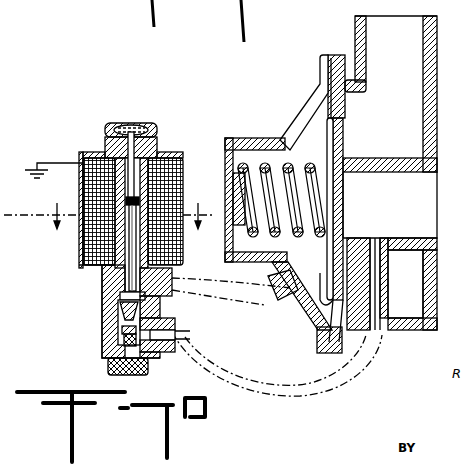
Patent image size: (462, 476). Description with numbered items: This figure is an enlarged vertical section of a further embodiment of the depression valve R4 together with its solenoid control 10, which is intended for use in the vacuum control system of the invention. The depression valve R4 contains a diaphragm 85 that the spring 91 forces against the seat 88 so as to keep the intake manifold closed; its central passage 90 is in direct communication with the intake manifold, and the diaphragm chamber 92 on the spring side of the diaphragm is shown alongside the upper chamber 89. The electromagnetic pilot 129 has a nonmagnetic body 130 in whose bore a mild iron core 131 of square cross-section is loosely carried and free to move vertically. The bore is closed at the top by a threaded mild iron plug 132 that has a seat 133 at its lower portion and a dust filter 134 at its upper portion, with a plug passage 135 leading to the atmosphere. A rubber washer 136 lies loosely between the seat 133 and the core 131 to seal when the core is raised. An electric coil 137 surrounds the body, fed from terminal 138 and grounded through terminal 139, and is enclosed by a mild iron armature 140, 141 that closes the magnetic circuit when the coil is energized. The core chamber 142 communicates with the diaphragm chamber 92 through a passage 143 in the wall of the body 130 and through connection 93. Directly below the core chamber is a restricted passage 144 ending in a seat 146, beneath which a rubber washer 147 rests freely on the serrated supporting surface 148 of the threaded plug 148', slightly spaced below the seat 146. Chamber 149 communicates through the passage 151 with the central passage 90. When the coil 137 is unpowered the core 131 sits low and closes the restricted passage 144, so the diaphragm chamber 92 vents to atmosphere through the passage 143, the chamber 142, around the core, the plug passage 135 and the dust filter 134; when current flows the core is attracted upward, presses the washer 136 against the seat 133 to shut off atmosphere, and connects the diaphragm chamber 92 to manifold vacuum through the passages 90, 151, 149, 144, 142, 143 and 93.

The section line 10 is at (111, 214).
The diaphragm 85 is at (344, 128).
The seat 88 is at (344, 172).
The upper chamber 89 is at (411, 53).
The central passage 90 is at (426, 229).
The spring 91 is at (318, 164).
The diaphragm chamber 92 is at (312, 198).
The connection 93 is at (226, 292).
The depression valve R4 is at (304, 112).
The electromagnetic pilot 129 is at (98, 153).
The pilot body 130 is at (104, 292).
The core 131 is at (104, 281).
The plug 132 is at (158, 140).
The seat 133 is at (136, 190).
The dust filter 134 is at (128, 123).
The plug passage 135 is at (120, 146).
The rubber washer 136 is at (96, 190).
The electric coil 137 is at (92, 236).
The terminal 138 is at (92, 260).
The terminal 139 is at (84, 156).
The armature 140 is at (182, 237).
The armature 141 is at (160, 152).
The core chamber 142 is at (84, 166).
The passage 143 is at (170, 286).
The restricted passage 144 is at (118, 316).
The seat 146 is at (118, 328).
The rubber washer 147 is at (162, 320).
The serrated supporting surface 148 is at (93, 344).
The threaded plug 148' is at (145, 370).
The chamber 149 is at (158, 346).
The passage 151 is at (176, 330).